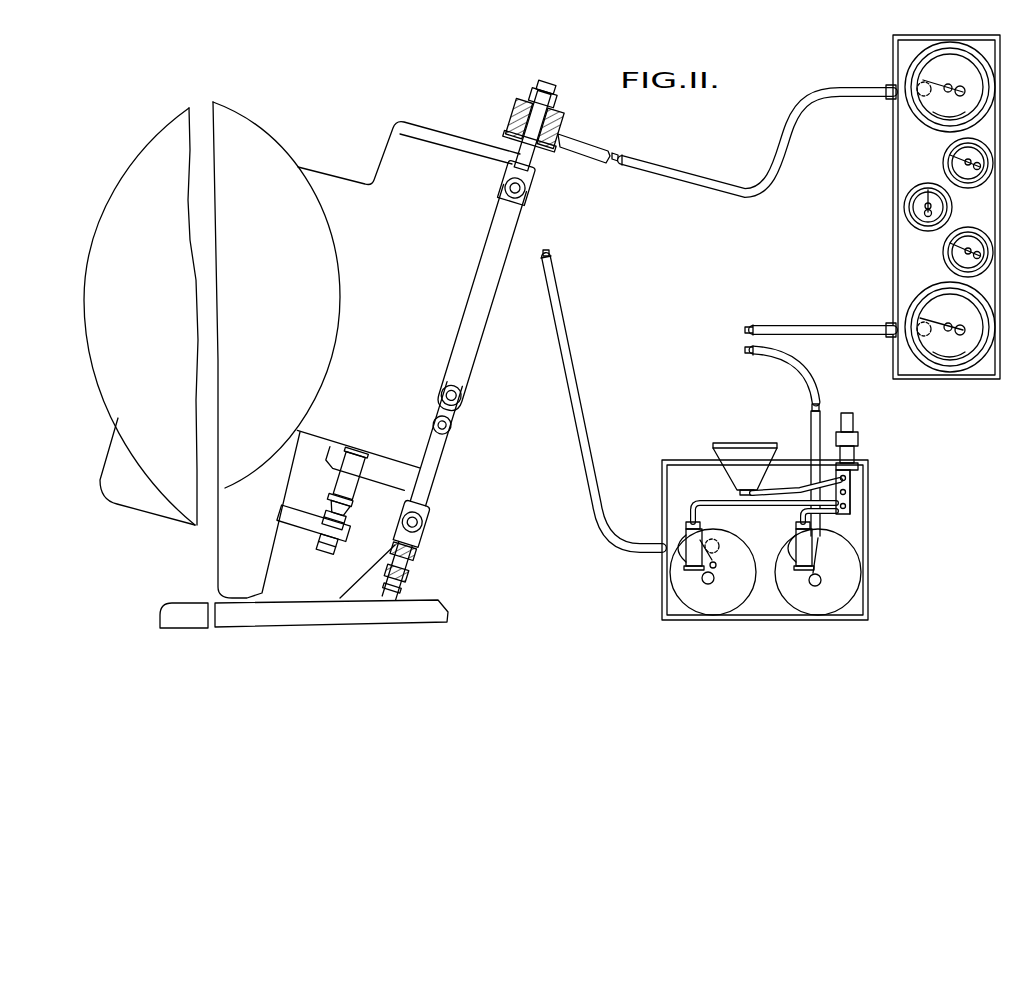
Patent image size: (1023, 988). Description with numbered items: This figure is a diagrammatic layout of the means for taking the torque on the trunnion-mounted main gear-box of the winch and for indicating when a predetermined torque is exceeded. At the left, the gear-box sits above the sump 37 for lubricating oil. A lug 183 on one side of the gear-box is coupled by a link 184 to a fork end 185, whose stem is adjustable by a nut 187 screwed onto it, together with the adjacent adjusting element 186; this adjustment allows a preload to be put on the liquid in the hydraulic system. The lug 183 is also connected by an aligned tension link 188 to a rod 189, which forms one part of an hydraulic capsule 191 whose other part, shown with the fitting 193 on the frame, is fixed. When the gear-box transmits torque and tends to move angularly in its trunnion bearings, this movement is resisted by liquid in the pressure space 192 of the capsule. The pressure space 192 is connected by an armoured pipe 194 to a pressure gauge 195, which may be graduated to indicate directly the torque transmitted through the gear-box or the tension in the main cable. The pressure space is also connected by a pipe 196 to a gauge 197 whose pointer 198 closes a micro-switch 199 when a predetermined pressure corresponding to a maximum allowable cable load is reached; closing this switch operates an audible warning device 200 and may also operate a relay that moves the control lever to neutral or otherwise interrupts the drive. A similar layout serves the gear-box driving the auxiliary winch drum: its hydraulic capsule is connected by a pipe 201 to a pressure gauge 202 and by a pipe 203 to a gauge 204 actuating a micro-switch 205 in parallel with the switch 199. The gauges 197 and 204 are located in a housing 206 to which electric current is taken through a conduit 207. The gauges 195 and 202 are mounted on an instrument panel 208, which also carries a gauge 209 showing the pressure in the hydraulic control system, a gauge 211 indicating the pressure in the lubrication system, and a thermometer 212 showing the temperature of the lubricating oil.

The sump 37 is at (302, 603).
The lug 183 is at (455, 412).
The link 184 is at (427, 468).
The fork end 185 is at (420, 538).
The adjusting nut 186 is at (395, 545).
The nut 187 is at (413, 570).
The tension link 188 is at (462, 370).
The rod 189 is at (509, 163).
The hydraulic capsule 191 is at (506, 124).
The pressure space 192 is at (557, 132).
The valve fitting 193 is at (343, 523).
The armoured pipe 194 is at (627, 160).
The pressure gauge 195 is at (933, 102).
The pipe 196 is at (543, 252).
The gauge 197 is at (680, 590).
The pointer 198 is at (713, 548).
The micro-switch 199 is at (687, 563).
The audible warning device 200 is at (733, 447).
The pipe 201 is at (797, 327).
The pressure gauge 202 is at (953, 350).
The pipe 203 is at (813, 418).
The gauge 204 is at (853, 562).
The micro-switch 205 is at (820, 577).
The housing 206 is at (870, 540).
The conduit 207 is at (847, 428).
The instrument panel 208 is at (907, 178).
The gauge 209 is at (950, 167).
The gauge 211 is at (953, 253).
The thermometer 212 is at (913, 210).